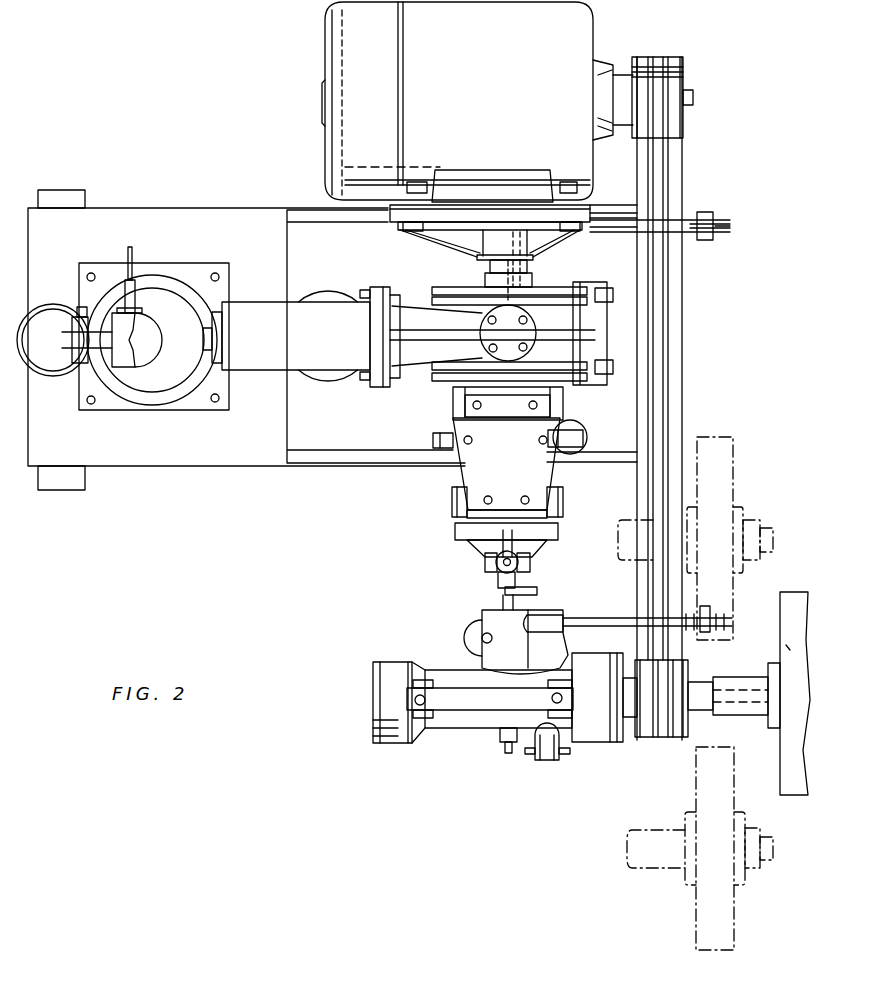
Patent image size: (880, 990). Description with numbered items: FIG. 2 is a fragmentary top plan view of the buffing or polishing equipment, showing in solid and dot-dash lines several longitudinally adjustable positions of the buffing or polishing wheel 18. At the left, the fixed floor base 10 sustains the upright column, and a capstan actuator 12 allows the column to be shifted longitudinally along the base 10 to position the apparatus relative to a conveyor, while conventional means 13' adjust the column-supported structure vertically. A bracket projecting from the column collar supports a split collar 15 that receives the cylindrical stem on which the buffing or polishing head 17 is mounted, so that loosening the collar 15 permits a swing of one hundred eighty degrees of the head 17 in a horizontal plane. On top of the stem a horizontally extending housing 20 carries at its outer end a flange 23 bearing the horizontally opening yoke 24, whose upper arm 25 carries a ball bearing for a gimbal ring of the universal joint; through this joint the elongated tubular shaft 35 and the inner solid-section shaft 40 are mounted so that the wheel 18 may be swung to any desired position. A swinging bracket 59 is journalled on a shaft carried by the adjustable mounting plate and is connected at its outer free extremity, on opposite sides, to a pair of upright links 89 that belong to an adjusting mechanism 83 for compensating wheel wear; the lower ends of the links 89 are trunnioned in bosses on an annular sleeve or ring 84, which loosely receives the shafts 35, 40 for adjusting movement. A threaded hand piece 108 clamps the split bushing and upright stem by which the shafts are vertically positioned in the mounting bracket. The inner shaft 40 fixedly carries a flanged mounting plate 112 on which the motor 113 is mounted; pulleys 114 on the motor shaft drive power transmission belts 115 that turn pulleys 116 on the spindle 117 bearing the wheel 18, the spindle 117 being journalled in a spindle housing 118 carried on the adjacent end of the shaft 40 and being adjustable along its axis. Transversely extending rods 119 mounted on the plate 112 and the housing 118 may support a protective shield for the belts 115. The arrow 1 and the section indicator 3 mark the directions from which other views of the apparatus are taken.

The valve assembly 1 is at (441, 770).
The section line FIG. 3 is at (535, 283).
The fixed floor base 10 is at (249, 207).
The capstan actuator 12 is at (57, 378).
The vertical adjusting means 13' is at (152, 321).
The split collar 15 is at (313, 370).
The buffing or polishing head 17 is at (470, 564).
The buffing or polishing wheel 18 is at (735, 486).
The housing 20 is at (290, 313).
The flange 23 is at (378, 388).
The yoke 24 is at (407, 301).
The upper arm of yoke 25 is at (431, 357).
The tubular shaft 35 is at (520, 284).
The inner shaft 40 is at (490, 263).
The swinging bracket 59 is at (478, 469).
The adjusting mechanism 83 is at (552, 553).
The annular mounting sleeve or ring 84 is at (458, 525).
The upright links 89 is at (452, 504).
The threaded hand piece 108 is at (538, 592).
The flanged mounting plate 112 is at (482, 207).
The motor 113 is at (335, 33).
The motor pulleys 114 is at (684, 124).
The power transmission belts 115 is at (700, 302).
The spindle pulleys 116 is at (688, 722).
The spindle 117 is at (707, 692).
The spindle housing 118 is at (500, 570).
The transversely extending rods 119 is at (727, 237).